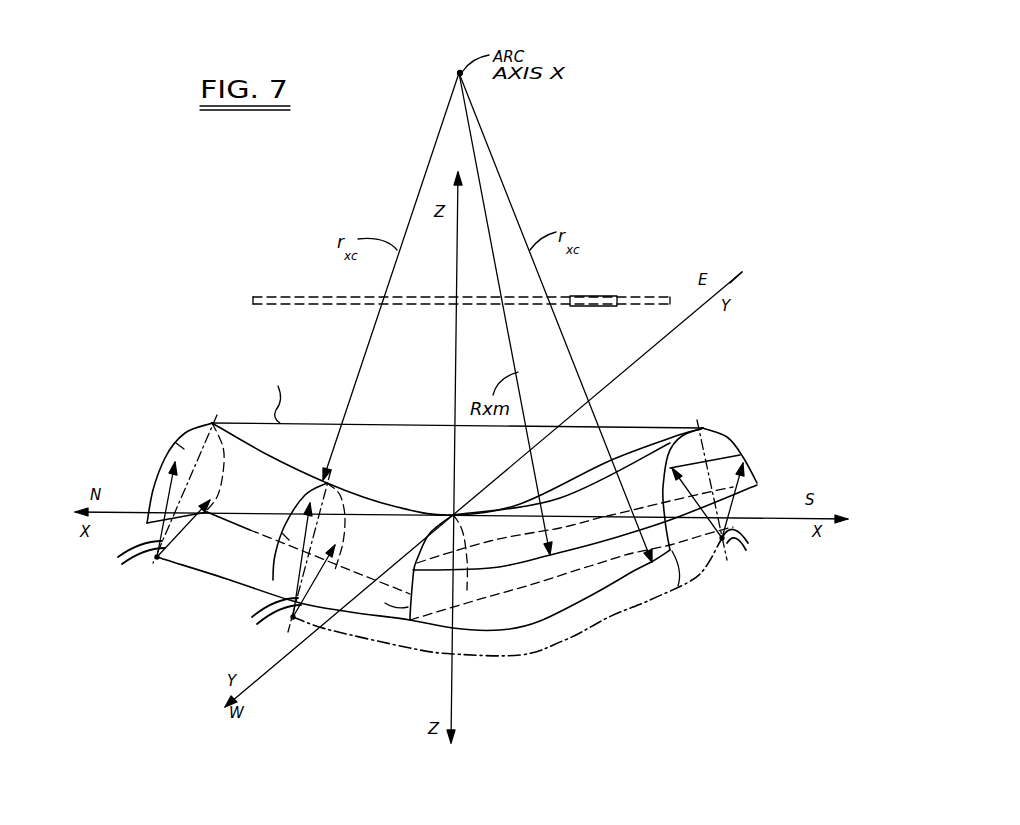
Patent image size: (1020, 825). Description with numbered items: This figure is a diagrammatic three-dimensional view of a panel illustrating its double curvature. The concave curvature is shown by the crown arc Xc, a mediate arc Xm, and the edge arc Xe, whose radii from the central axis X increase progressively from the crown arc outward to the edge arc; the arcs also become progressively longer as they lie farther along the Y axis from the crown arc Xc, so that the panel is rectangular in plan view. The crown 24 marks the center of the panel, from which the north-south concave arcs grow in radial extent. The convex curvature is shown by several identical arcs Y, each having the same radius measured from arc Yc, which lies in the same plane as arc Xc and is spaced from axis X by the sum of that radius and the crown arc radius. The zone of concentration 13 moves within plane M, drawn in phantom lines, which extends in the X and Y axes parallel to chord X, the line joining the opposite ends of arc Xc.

The zone of concentration 13 is at (593, 298).
The crown 24 is at (446, 521).
The plane M is at (292, 293).
The crown arc Xc is at (368, 495).
The mediate arc Xm is at (527, 558).
The edge arc Xe is at (496, 628).
The arc Yc is at (552, 643).